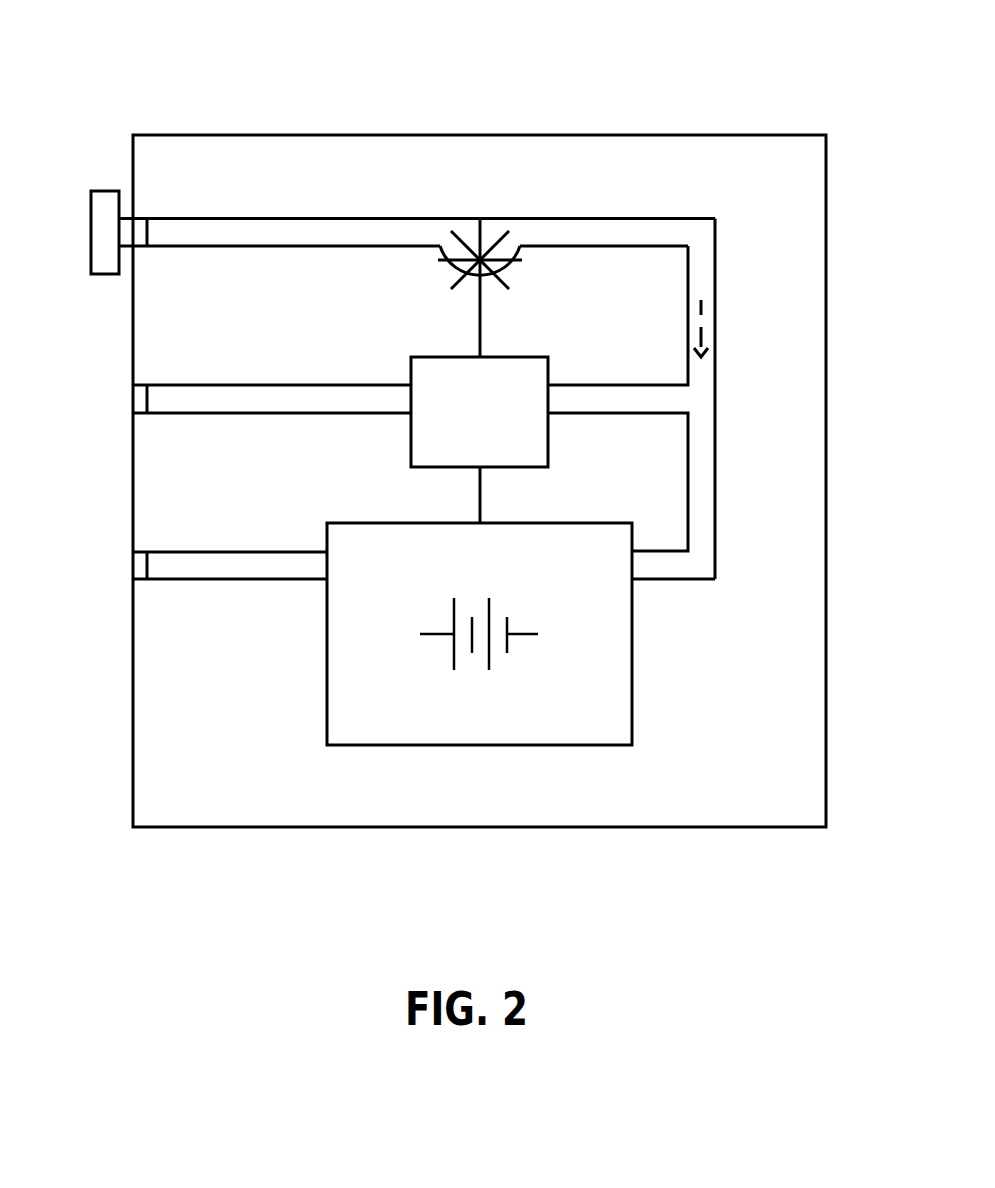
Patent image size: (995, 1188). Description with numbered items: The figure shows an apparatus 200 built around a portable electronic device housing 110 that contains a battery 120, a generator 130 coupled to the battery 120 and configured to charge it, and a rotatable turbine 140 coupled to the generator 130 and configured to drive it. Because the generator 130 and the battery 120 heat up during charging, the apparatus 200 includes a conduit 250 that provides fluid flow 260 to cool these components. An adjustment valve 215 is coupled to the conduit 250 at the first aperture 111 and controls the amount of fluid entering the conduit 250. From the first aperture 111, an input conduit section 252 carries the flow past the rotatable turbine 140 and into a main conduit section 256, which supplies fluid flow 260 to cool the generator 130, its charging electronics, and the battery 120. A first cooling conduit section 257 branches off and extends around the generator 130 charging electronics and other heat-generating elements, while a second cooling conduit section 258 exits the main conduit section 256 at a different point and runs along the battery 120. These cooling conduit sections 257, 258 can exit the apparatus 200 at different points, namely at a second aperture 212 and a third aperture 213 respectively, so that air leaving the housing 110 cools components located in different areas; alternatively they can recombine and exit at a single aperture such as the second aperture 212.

The apparatus 200 is at (818, 76).
The portable electronic device housing 110 is at (653, 133).
The first aperture 111 is at (104, 232).
The adjustment valve 215 is at (105, 190).
The input conduit section 252 is at (265, 218).
The conduit 250 is at (610, 198).
The conduit section 256 is at (716, 275).
The fluid flow 260 is at (702, 335).
The rotatable turbine 140 is at (483, 232).
The generator 130 is at (550, 370).
The second aperture 212 is at (119, 399).
The first cooling conduit section 257 is at (602, 415).
The third aperture 213 is at (119, 566).
The second cooling conduit section 258 is at (668, 580).
The battery 120 is at (633, 690).